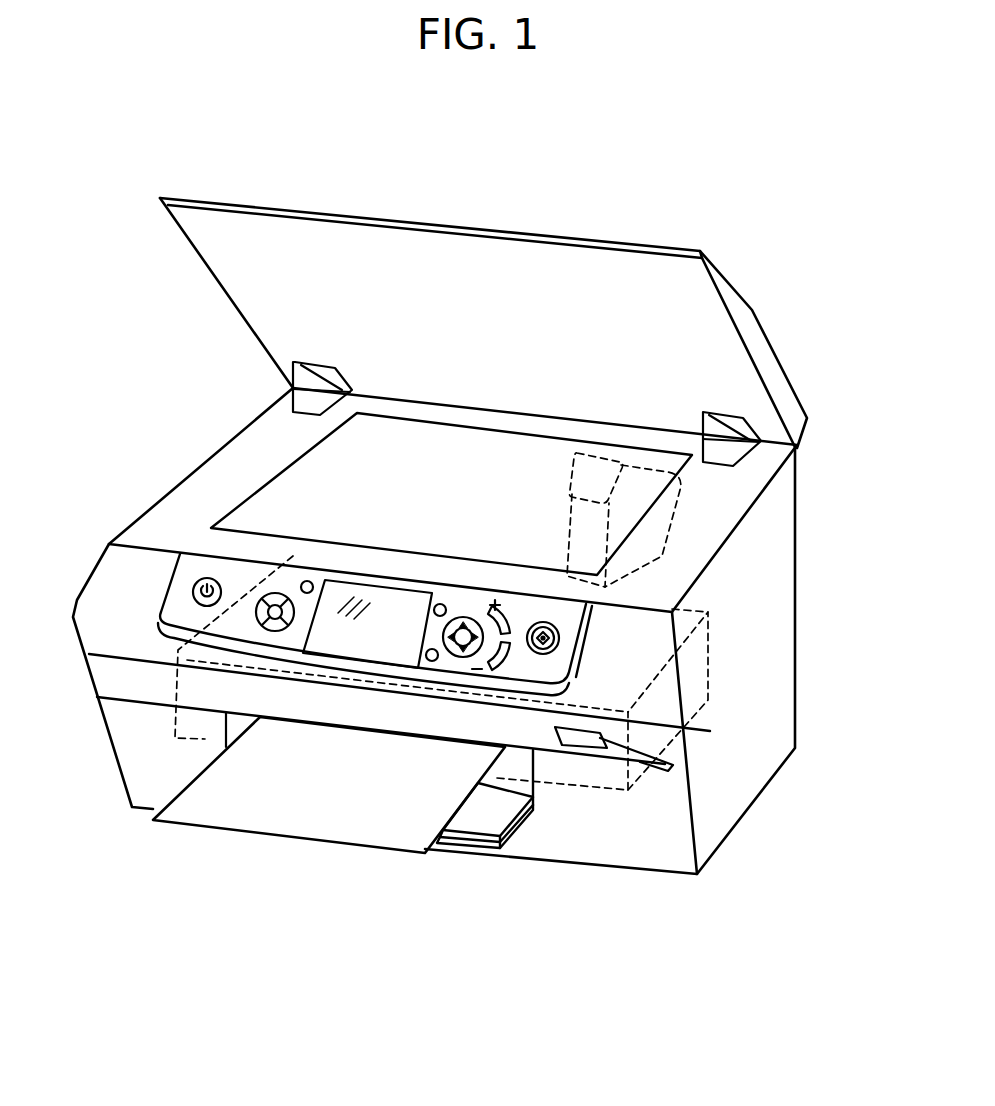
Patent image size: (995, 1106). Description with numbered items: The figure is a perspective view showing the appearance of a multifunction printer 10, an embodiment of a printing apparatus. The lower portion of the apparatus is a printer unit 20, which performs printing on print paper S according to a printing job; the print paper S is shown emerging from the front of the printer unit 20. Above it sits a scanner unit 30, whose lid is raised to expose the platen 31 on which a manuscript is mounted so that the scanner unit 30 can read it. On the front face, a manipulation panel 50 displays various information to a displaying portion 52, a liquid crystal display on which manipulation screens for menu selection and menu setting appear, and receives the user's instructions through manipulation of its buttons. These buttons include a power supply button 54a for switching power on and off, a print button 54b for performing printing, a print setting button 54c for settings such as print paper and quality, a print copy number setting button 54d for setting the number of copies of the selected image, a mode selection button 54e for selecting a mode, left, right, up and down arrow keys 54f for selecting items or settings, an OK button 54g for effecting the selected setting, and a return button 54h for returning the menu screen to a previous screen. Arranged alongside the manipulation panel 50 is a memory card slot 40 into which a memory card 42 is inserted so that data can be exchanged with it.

The multifunction printer 10 is at (606, 173).
The printer unit 20 is at (707, 612).
The scanner unit 30 is at (657, 490).
The platen 31 is at (343, 468).
The memory card slot 40 is at (655, 762).
The memory card 42 is at (623, 748).
The manipulation panel 50 is at (177, 593).
The displaying portion 52 is at (382, 607).
The power supply button 54a is at (205, 607).
The print button 54b is at (562, 637).
The print setting button 54c is at (436, 616).
The print copy number setting button 54d is at (511, 667).
The mode selection button 54e is at (263, 631).
The arrow keys 54f is at (455, 652).
The OK button 54g is at (465, 650).
The return button 54h is at (432, 661).
The print paper S is at (170, 798).